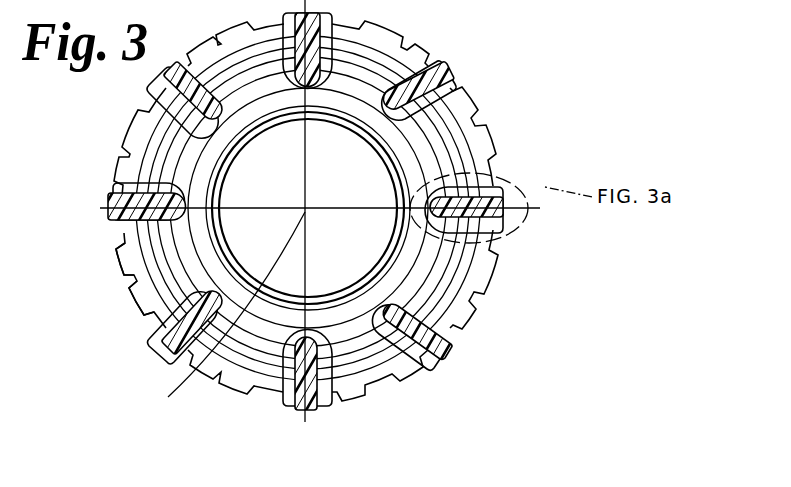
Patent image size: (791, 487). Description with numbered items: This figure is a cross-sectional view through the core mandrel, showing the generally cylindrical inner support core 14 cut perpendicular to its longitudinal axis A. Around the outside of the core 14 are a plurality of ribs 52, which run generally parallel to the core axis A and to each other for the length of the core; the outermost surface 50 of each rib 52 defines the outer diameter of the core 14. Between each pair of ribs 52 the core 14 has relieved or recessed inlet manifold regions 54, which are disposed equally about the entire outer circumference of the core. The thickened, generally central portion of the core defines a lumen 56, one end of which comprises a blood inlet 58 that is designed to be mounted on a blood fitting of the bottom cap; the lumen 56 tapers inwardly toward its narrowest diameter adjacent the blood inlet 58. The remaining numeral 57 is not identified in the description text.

The core 14 is at (530, 111).
The outermost surface 50 is at (447, 72).
The ribs 52 is at (322, 404).
The inlet manifold regions 54 is at (268, 352).
The lumen 56 is at (295, 176).
The pin slot 57 is at (119, 272).
The blood inlet 58 is at (138, 306).
The longitudinal axis A is at (228, 312).